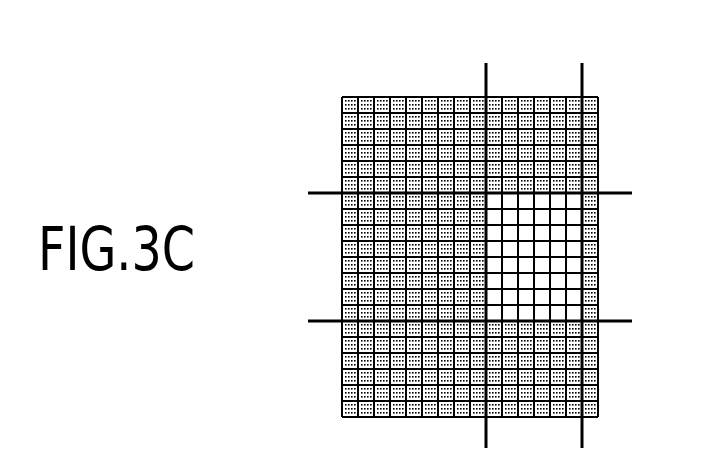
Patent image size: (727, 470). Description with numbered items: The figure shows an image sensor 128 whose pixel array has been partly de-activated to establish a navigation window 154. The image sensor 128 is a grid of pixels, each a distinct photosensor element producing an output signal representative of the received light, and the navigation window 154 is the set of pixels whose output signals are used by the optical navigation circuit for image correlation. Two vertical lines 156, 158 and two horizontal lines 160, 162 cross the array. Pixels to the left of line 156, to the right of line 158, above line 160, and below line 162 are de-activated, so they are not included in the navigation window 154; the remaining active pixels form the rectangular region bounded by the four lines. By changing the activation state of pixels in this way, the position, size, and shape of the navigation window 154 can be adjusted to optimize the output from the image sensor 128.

The image sensor 128 is at (589, 95).
The navigation window 154 is at (590, 263).
The line 156 is at (484, 84).
The line 158 is at (580, 84).
The line 160 is at (617, 193).
The line 162 is at (617, 321).